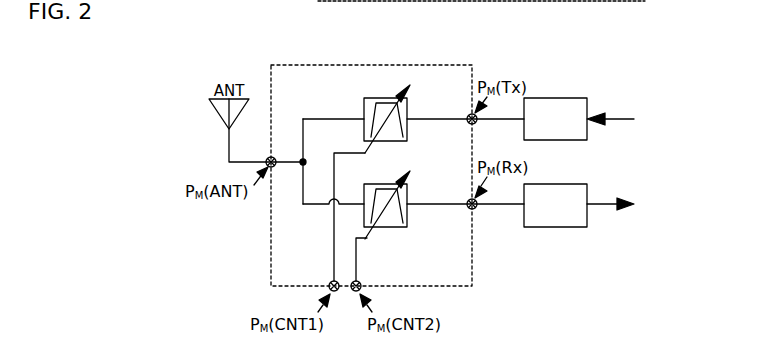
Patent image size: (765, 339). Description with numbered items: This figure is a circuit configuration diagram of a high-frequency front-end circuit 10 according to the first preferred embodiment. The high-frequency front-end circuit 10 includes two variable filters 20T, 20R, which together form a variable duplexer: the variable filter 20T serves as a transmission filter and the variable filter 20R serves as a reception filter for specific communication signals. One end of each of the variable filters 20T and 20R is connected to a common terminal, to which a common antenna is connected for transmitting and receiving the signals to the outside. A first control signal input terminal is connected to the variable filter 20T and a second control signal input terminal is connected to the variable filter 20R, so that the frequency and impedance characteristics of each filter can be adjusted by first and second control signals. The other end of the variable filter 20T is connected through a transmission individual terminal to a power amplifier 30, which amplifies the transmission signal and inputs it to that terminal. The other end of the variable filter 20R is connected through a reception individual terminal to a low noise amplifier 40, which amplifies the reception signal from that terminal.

The high-frequency front-end circuit 10 is at (440, 64).
The variable filter 20T is at (368, 98).
The variable filter 20R is at (396, 227).
The power amplifier 30 is at (565, 98).
The low noise amplifier 40 is at (565, 184).